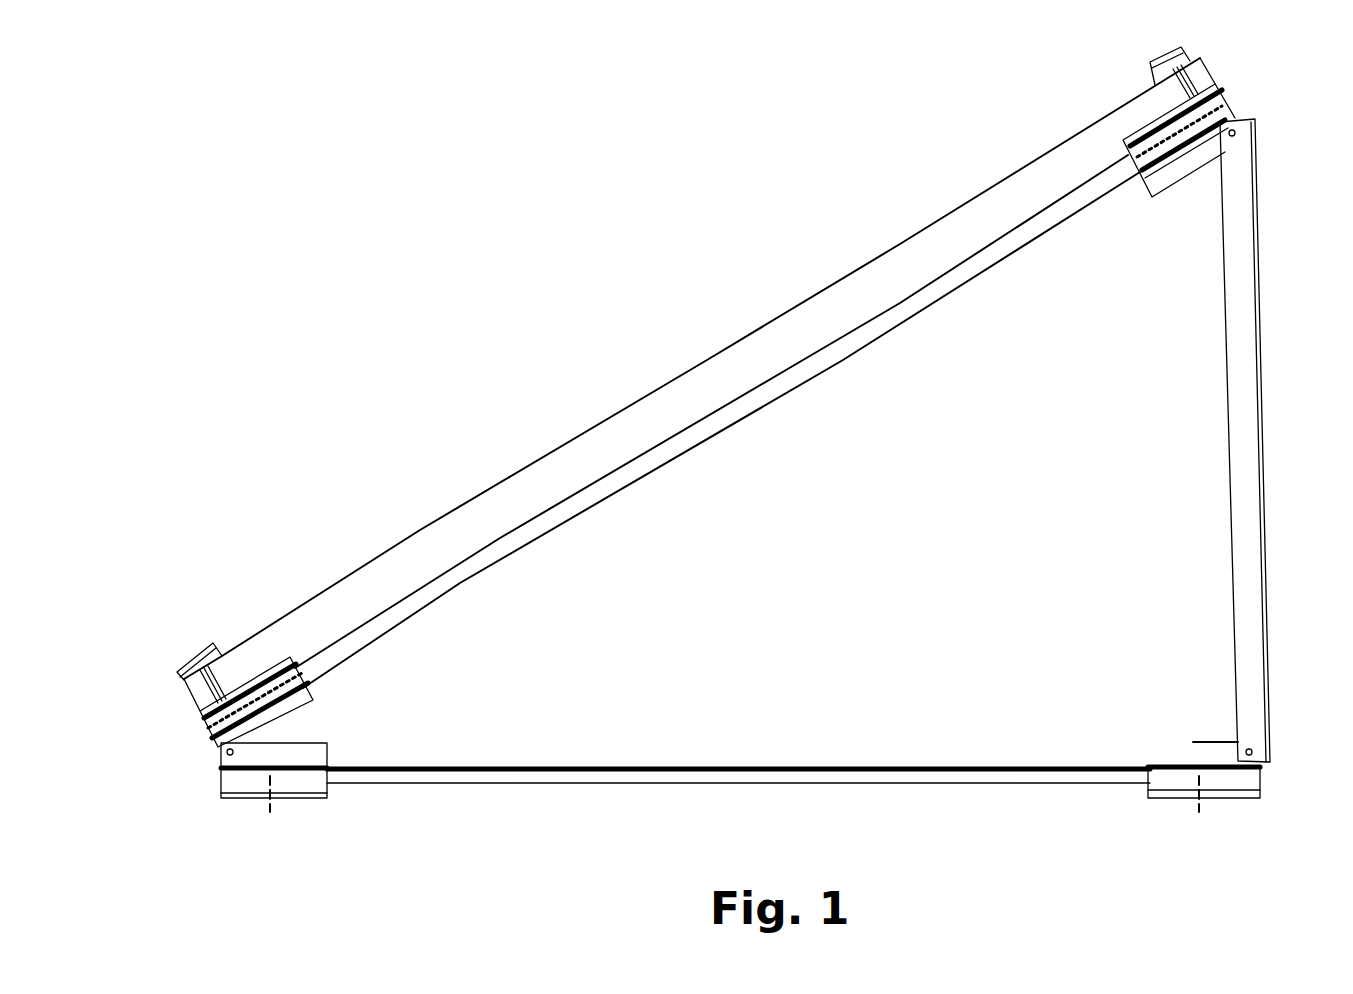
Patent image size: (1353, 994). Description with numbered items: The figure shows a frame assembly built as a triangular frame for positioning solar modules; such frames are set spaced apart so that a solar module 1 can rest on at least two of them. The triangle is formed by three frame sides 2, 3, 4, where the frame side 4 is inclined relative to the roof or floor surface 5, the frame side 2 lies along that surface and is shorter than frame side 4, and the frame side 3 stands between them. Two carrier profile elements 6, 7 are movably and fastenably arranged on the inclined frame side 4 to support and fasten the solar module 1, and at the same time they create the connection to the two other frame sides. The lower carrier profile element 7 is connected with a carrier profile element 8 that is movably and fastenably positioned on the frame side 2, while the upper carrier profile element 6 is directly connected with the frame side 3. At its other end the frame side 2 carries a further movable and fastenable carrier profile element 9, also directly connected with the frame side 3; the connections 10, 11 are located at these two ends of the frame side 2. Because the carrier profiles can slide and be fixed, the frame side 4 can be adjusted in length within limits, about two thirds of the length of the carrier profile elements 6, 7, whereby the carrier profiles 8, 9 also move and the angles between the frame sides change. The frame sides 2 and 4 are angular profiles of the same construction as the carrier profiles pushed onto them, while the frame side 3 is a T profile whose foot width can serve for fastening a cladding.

The solar module 1 is at (842, 302).
The frame side 2 is at (702, 766).
The frame side 3 is at (1243, 443).
The frame side 4 is at (760, 397).
The roof or floor surface 5 is at (738, 812).
The carrier profile element 6 is at (1217, 92).
The carrier profile element 7 is at (200, 735).
The carrier profile element 8 is at (327, 745).
The carrier profile element 9 is at (1243, 787).
The connection 10 is at (272, 808).
The connection 11 is at (1198, 830).